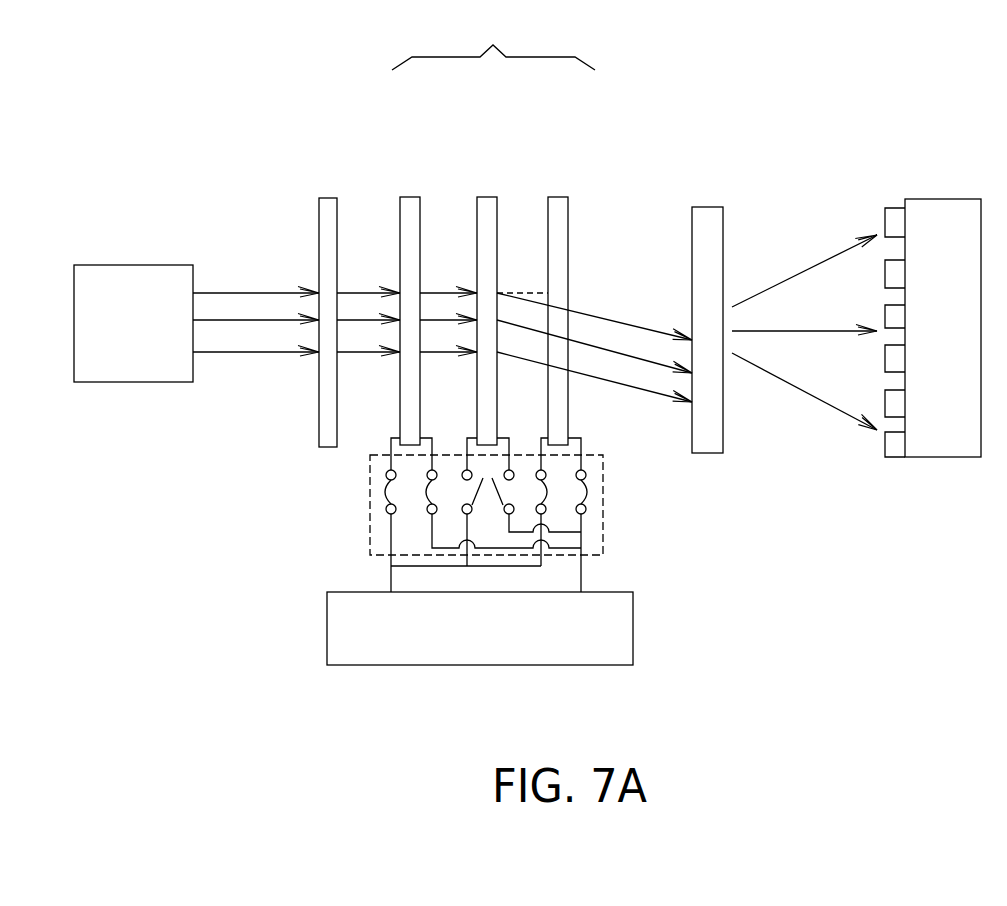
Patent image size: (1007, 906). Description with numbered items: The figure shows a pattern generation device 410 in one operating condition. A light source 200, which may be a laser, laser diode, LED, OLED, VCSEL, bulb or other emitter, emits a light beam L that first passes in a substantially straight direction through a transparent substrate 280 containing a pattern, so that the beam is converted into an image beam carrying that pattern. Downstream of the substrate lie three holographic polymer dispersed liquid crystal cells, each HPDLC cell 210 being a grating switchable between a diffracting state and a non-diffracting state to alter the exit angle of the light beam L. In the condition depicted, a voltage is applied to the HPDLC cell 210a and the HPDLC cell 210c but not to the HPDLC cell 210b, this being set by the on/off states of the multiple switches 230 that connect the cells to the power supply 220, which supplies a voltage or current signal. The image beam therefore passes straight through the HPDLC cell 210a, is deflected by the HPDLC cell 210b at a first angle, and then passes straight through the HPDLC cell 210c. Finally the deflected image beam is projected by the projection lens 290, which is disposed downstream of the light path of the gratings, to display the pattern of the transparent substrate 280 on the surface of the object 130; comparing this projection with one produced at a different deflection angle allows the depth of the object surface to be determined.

The pattern generation device 410 is at (181, 54).
The light source 200 is at (133, 265).
The light beam L is at (256, 304).
The transparent substrate 280 is at (326, 198).
The HPDLC cell 210 is at (493, 42).
The HPDLC cell 210a is at (411, 197).
The HPDLC cell 210b is at (492, 197).
The HPDLC cell 210c is at (560, 197).
The projection lens 290 is at (708, 207).
The object 130 is at (943, 199).
The switches 230 is at (603, 513).
The power supply 220 is at (633, 630).